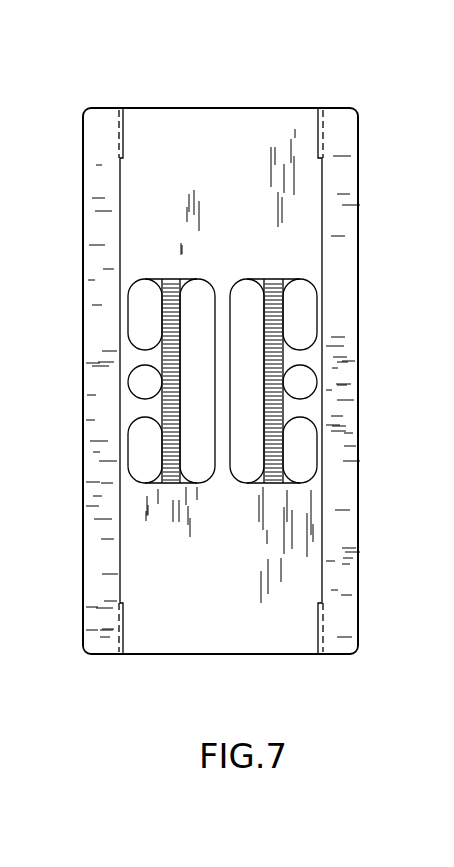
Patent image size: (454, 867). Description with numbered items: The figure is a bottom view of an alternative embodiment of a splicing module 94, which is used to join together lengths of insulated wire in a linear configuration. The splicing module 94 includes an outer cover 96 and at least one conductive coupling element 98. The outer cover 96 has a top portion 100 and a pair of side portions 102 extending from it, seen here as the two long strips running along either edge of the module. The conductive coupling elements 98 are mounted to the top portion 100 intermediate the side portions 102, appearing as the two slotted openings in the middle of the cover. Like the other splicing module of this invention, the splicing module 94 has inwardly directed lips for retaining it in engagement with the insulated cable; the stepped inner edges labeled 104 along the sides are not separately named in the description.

The cartridge body 94 is at (357, 109).
The bottom end 96 is at (93, 647).
The slot openings 98 is at (240, 479).
The top end 100 is at (212, 119).
The side walls 102 is at (91, 471).
The inner step edges 104 is at (124, 128).